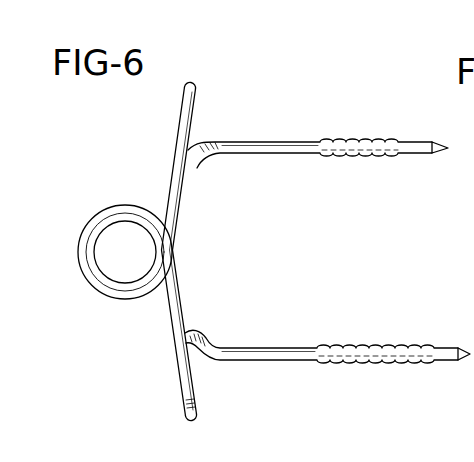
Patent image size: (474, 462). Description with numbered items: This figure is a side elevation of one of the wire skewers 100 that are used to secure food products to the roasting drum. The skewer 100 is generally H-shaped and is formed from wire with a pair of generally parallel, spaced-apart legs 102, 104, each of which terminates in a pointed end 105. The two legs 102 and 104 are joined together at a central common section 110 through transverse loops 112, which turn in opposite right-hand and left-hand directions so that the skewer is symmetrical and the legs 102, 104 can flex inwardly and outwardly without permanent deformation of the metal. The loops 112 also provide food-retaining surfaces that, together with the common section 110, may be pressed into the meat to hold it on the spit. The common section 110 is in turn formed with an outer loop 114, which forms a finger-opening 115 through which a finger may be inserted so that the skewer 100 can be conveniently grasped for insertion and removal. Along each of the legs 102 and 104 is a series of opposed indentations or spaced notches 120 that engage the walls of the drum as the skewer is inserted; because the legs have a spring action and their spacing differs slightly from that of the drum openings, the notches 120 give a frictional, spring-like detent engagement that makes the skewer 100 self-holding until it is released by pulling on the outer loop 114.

The wire skewer 100 is at (278, 136).
The leg 102 is at (303, 141).
The leg 104 is at (254, 347).
The pointed end 105 is at (436, 155).
The common section 110 is at (172, 170).
The transverse loop 112 is at (193, 86).
The outer loop 114 is at (89, 217).
The finger-opening 115 is at (122, 250).
The notch 120 is at (377, 155).